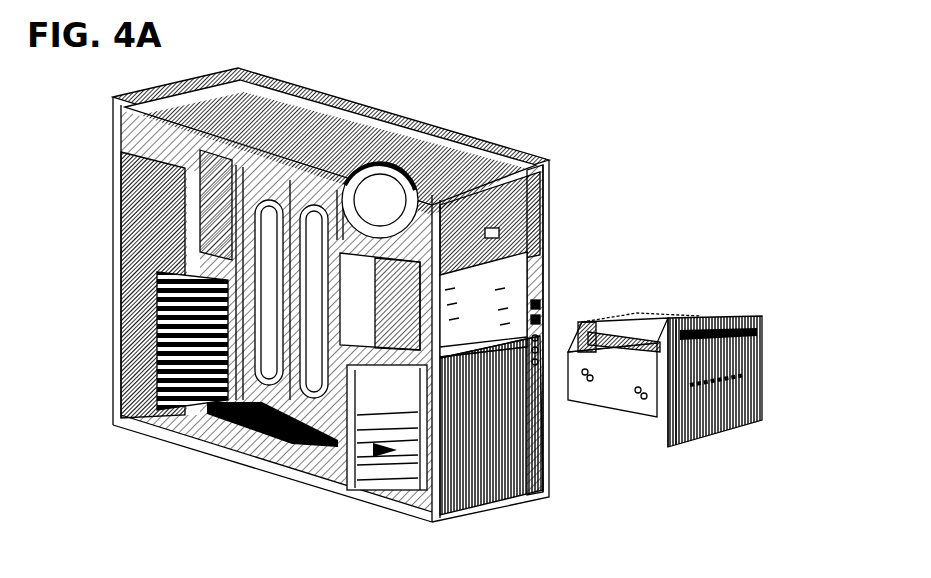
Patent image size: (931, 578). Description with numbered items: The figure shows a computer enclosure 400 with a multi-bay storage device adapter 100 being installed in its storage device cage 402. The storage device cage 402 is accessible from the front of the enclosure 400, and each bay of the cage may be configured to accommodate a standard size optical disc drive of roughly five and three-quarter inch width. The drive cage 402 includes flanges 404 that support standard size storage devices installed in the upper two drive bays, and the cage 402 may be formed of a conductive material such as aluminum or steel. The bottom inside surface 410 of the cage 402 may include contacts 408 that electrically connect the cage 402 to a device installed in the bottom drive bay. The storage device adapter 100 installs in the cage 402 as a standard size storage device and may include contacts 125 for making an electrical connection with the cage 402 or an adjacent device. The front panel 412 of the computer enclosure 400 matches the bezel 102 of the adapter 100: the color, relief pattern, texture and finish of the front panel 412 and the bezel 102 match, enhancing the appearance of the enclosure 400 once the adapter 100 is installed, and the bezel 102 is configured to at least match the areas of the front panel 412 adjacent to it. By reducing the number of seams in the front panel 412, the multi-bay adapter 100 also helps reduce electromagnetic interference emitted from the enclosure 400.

The computer enclosure 400 is at (376, 101).
The storage device cage 402 is at (526, 258).
The flanges 404 is at (548, 266).
The contacts 408 is at (458, 362).
The bottom inside surface 410 is at (466, 331).
The front panel 412 is at (541, 468).
The multi-bay storage device adapter 100 is at (740, 308).
The contacts 125 is at (706, 326).
The bezel 102 is at (741, 407).